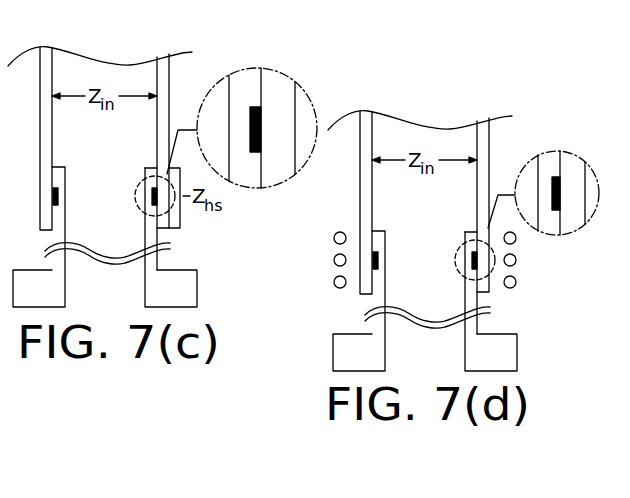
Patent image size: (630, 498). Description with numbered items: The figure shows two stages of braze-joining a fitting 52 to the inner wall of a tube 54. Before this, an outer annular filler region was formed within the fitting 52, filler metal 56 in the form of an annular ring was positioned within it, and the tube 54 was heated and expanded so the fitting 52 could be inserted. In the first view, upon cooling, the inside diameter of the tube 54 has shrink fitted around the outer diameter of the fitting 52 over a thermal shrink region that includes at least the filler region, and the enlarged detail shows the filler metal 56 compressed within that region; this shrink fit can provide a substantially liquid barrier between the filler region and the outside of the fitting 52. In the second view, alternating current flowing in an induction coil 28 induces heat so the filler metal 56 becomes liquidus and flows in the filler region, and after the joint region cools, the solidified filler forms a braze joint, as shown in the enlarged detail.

In FIG. 7D, the induction coil 28 is at (520, 232).
In FIG. 7C, the fitting 52 is at (186, 288).
In FIG. 7D, the fitting 52 is at (510, 355).
In FIG. 7C, the tube 54 is at (176, 57).
In FIG. 7D, the tube 54 is at (482, 124).
In FIG. 7C, the filler metal 56 is at (58, 196).
In FIG. 7D, the filler metal 56 is at (378, 260).